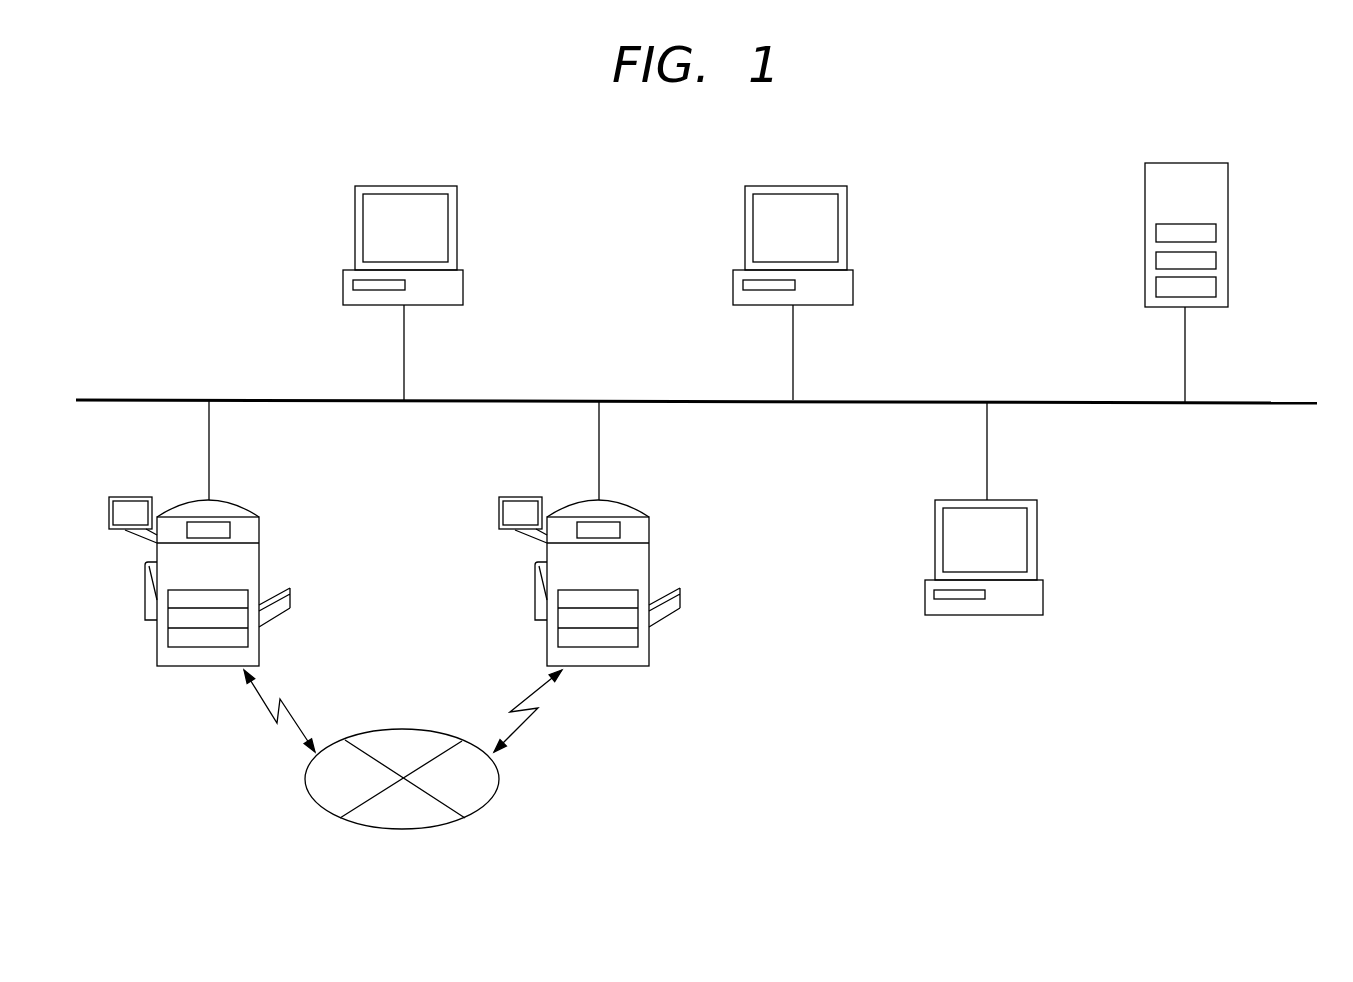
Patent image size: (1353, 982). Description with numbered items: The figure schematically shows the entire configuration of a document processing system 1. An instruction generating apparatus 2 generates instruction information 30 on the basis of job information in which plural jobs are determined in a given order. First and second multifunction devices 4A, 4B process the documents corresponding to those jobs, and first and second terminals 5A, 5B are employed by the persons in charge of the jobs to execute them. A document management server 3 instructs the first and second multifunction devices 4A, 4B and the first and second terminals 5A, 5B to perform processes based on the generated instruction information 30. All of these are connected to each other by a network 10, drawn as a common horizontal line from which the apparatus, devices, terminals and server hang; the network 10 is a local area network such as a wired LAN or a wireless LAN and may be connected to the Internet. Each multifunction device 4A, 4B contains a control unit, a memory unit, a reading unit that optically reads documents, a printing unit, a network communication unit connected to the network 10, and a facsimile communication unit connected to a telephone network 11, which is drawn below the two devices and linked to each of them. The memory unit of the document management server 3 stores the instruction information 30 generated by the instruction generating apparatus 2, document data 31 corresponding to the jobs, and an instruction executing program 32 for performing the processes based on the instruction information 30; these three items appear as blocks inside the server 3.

The document processing system 1 is at (851, 148).
The instruction generating apparatus 2 is at (1037, 552).
The document management server 3 is at (1223, 248).
The first multifunction device 4A is at (259, 562).
The second multifunction device 4B is at (649, 562).
The first terminal 5A is at (457, 228).
The second terminal 5B is at (847, 228).
The network 10 is at (1242, 404).
The telephone network 11 is at (499, 779).
The instruction information 30 is at (1216, 232).
The document data 31 is at (1216, 260).
The instruction executing program 32 is at (1216, 285).